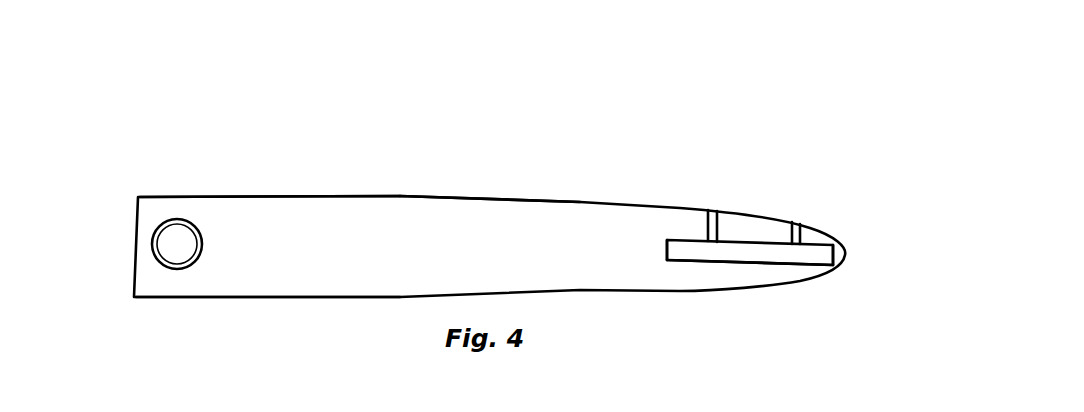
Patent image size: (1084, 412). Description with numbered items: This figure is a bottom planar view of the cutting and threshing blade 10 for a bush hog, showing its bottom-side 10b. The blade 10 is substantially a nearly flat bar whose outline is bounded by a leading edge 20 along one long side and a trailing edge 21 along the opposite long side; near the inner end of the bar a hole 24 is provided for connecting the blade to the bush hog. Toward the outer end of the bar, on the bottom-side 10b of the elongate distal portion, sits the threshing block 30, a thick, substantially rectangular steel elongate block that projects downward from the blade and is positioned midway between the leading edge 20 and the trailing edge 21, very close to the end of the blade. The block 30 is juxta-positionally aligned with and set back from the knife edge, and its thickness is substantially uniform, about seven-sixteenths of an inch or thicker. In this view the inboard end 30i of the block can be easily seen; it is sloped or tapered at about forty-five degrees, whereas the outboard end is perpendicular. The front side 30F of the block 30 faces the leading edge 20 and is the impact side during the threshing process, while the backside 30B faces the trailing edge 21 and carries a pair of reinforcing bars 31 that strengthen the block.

The cutting and threshing blade 10 is at (168, 314).
The bottom-side 10b is at (515, 230).
The leading edge 20 is at (403, 298).
The trailing edge 21 is at (400, 196).
The hole 24 is at (168, 237).
The threshing block 30 is at (781, 265).
The inboard end of the block 30i is at (680, 243).
The backside of the threshing block 30B is at (752, 237).
The front side of the block 30F is at (746, 265).
The reinforcing bars 31 is at (718, 210).